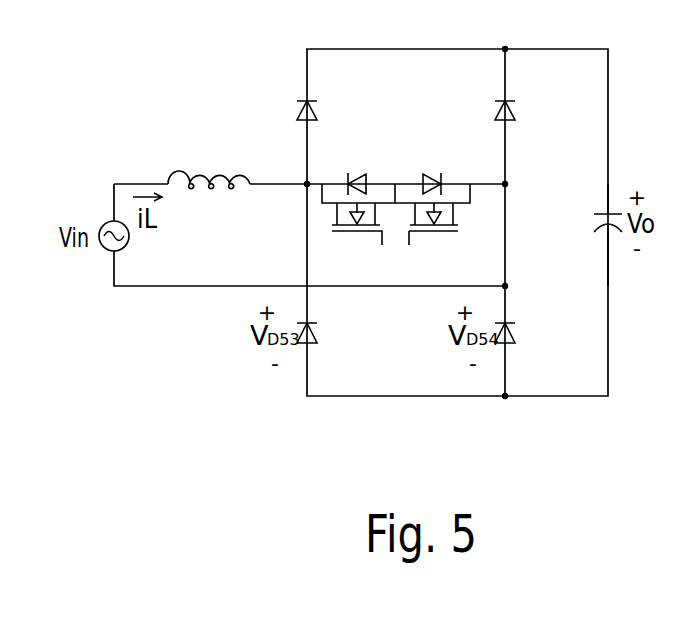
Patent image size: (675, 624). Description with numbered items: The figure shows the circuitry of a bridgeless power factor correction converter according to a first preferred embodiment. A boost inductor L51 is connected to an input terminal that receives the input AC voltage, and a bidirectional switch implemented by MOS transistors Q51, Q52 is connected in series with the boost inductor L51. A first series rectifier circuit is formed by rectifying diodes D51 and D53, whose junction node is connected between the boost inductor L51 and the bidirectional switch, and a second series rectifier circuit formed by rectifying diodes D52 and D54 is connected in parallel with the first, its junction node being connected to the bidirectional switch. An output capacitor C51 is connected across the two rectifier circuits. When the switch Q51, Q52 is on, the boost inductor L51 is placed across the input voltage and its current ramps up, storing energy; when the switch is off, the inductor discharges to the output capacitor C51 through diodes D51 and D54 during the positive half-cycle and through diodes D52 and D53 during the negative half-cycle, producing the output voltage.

The boost inductor L51 is at (209, 162).
The rectifying diode D51 is at (334, 115).
The rectifying diode D52 is at (533, 115).
The rectifying diode D53 is at (336, 335).
The rectifying diode D54 is at (534, 335).
The MOS transistor of bidirectional switch Q51 is at (358, 224).
The MOS transistor of bidirectional switch Q52 is at (432, 224).
The output capacitor C51 is at (585, 235).